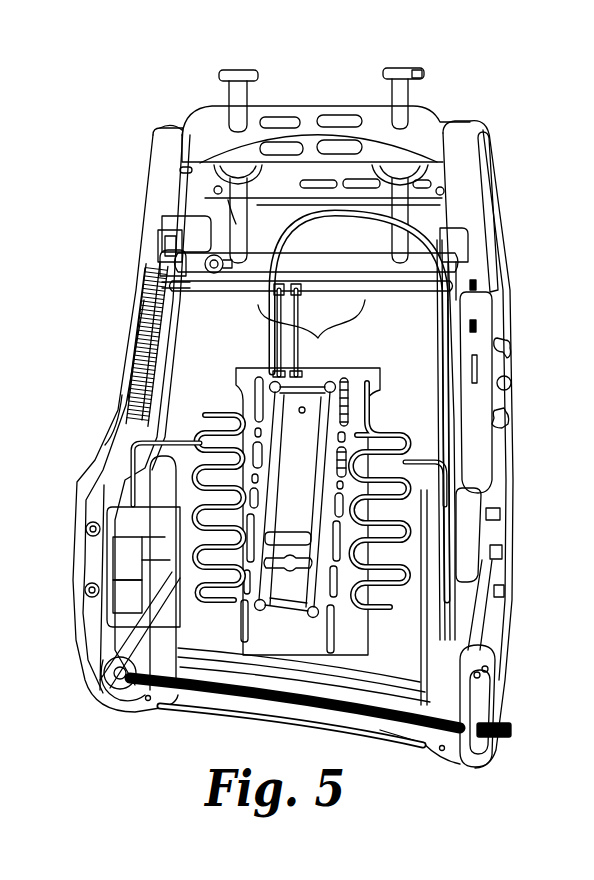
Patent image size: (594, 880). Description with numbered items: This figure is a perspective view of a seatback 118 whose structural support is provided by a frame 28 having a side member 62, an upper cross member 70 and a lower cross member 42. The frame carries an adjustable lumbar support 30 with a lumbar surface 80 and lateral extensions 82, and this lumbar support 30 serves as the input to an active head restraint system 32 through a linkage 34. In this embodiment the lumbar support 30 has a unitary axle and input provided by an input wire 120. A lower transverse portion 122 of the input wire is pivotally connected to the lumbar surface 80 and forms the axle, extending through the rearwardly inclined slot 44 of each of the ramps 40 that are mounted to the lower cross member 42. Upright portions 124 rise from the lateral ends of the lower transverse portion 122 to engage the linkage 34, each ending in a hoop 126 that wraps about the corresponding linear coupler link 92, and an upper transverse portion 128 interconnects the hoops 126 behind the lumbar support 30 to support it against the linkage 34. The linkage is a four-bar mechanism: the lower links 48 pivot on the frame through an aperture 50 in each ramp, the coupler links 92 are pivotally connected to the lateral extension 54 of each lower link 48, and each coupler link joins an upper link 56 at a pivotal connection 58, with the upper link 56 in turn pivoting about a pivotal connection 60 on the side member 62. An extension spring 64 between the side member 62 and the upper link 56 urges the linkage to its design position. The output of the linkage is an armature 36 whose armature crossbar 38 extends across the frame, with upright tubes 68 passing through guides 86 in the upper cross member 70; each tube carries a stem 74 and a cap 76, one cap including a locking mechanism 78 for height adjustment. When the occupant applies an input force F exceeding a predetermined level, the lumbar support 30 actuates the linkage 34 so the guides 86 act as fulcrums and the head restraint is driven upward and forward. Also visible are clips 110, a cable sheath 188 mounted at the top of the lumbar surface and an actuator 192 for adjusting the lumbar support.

The frame 28 is at (497, 172).
The lumbar support 30 is at (235, 391).
The active head restraint system 32 is at (131, 143).
The linkage 34 is at (147, 397).
The armature 36 is at (417, 219).
The armature crossbar 38 is at (281, 262).
The ramps 40 is at (136, 705).
The lower cross member 42 is at (222, 713).
The slot 44 is at (104, 674).
The lower links 48 is at (96, 600).
The aperture 50 is at (116, 622).
The lateral extension 54 is at (107, 556).
The upper link 56 is at (166, 231).
The pivotal connection 58 is at (178, 280).
The pivotal connection 60 is at (180, 221).
The side member 62 is at (112, 392).
The extension spring 64 is at (147, 325).
The upright tubes 68 is at (165, 130).
The upper cross member 70 is at (308, 96).
The stem 74 is at (407, 100).
The cap 76 is at (377, 78).
The locking mechanism 78 is at (417, 72).
The lumbar surface 80 is at (314, 466).
The lateral extensions 82 is at (388, 429).
The guides 86 is at (228, 222).
The linear coupler link 92 is at (210, 273).
The clips 110 is at (311, 330).
The seatback 118 is at (498, 91).
The input wire 120 is at (169, 436).
The lower transverse portion 122 is at (416, 752).
The upright portions 124 is at (494, 655).
The hoop 126 is at (133, 447).
The upper transverse portion 128 is at (418, 458).
The cable sheath 188 is at (452, 239).
The actuator 192 is at (455, 585).
The input force F is at (300, 497).